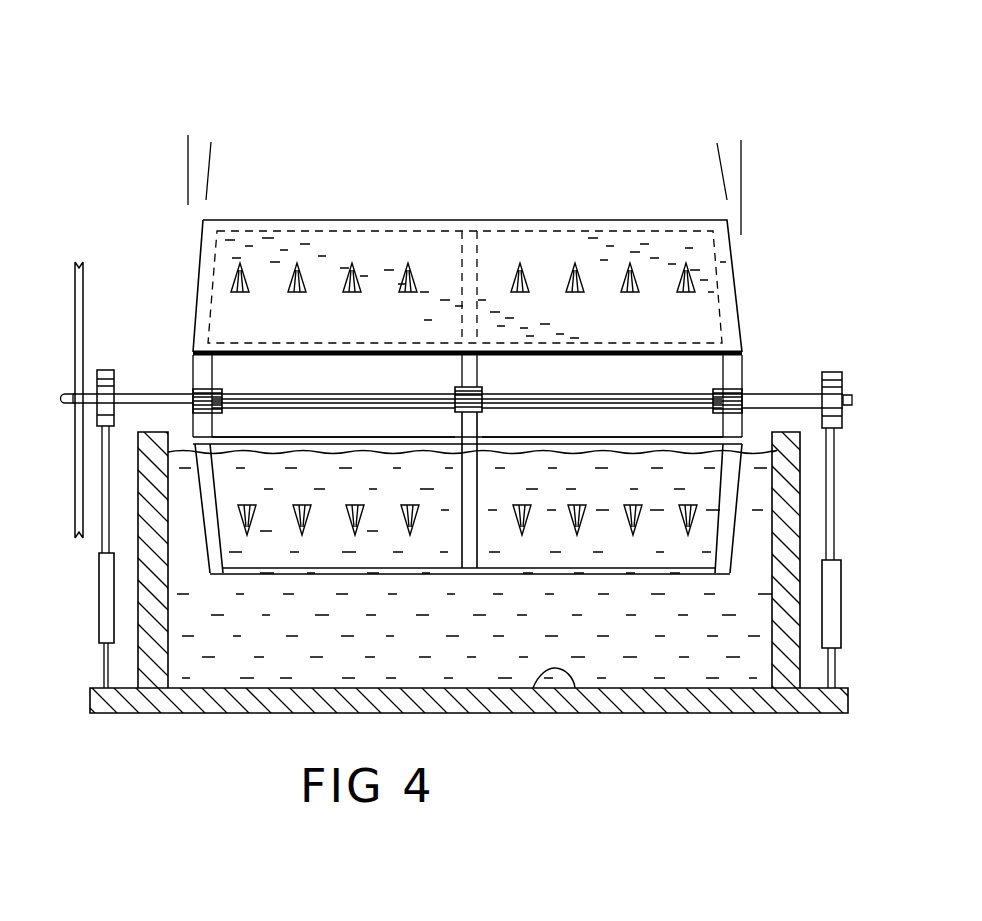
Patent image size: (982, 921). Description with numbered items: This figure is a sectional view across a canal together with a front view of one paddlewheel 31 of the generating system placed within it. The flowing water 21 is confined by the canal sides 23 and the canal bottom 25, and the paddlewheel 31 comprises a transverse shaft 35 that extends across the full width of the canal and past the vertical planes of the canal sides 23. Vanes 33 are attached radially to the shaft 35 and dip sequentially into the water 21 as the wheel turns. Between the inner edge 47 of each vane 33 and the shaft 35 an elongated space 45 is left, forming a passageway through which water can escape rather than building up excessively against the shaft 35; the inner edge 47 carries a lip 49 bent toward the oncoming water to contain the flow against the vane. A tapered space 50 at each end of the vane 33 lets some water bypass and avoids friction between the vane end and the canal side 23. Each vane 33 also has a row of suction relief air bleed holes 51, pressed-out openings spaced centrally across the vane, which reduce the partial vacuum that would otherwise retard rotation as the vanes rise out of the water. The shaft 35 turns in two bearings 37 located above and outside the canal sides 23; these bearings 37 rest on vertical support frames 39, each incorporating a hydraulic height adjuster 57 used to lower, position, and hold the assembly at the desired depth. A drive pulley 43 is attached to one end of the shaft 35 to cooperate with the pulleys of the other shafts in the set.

The water 21 is at (480, 645).
The canal sides 23 is at (173, 625).
The canal bottom 25 is at (560, 690).
The paddlewheel 31 is at (466, 60).
The vane 33 is at (538, 220).
The transverse shaft 35 is at (162, 392).
The bearings 37 is at (104, 368).
The support frames 39 is at (103, 535).
The drive pulley 43 is at (73, 503).
The elongated space 45 is at (322, 388).
The inner edge 47 is at (413, 438).
The lip 49 is at (552, 440).
The tapered space 50 is at (749, 546).
The suction relief air bleed holes 51 is at (303, 283).
The hydraulic height adjuster 57 is at (102, 610).